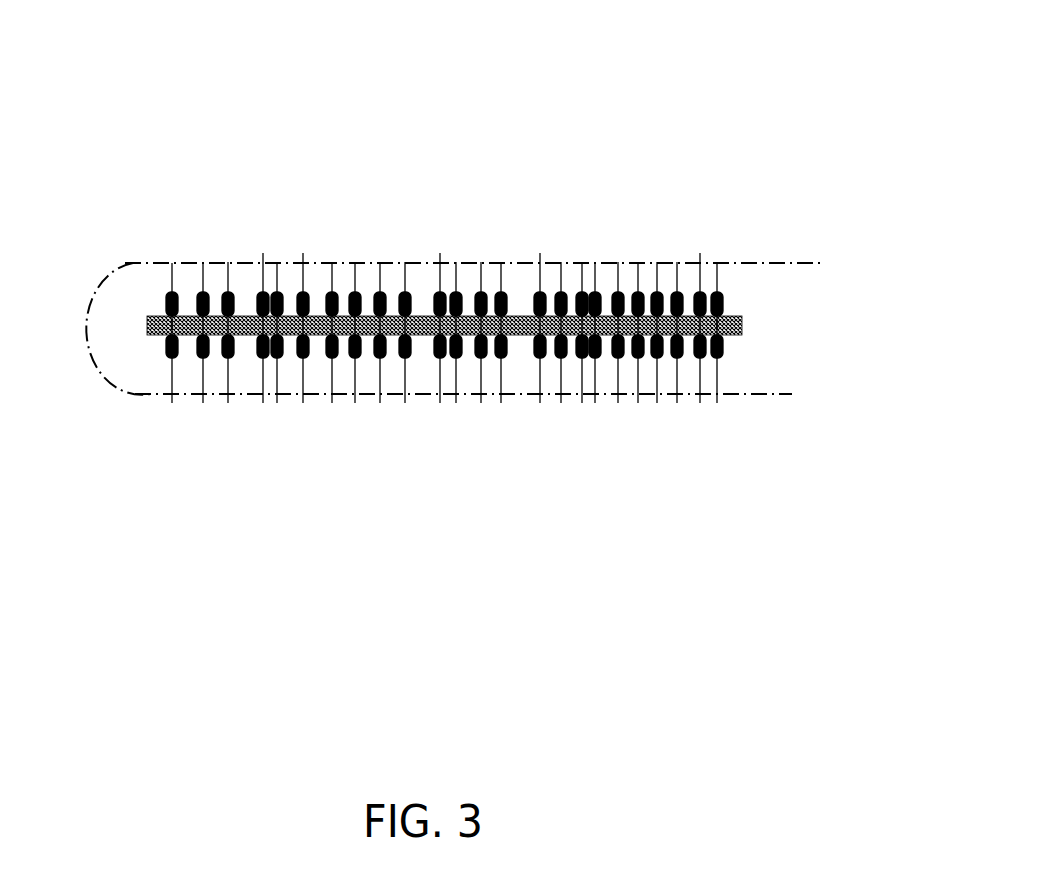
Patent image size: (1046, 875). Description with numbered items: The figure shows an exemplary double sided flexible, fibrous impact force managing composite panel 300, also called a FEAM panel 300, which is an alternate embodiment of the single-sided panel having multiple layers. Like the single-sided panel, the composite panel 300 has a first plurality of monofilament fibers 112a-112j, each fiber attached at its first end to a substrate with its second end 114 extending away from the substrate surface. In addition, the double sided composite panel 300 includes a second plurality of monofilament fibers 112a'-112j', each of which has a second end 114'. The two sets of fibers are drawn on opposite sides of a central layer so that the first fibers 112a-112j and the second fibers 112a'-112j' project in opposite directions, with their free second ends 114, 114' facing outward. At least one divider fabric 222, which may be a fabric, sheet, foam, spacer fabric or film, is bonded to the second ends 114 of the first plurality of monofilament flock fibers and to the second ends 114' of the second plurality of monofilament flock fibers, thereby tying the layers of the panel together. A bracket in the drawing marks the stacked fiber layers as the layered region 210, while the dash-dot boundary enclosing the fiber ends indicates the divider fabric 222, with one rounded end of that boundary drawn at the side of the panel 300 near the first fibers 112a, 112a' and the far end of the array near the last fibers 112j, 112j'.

The double sided flexible, fibrous impact force managing composite panel 300 is at (437, 145).
The electrode array 210 is at (735, 283).
The divider fabric 222 is at (88, 379).
The monofilament fiber 112a is at (145, 453).
The monofilament fiber 112a' is at (147, 204).
The monofilament fiber 112j is at (689, 455).
The monofilament fiber 112j' is at (689, 204).
The second end 114 is at (207, 389).
The second end 114' is at (219, 237).